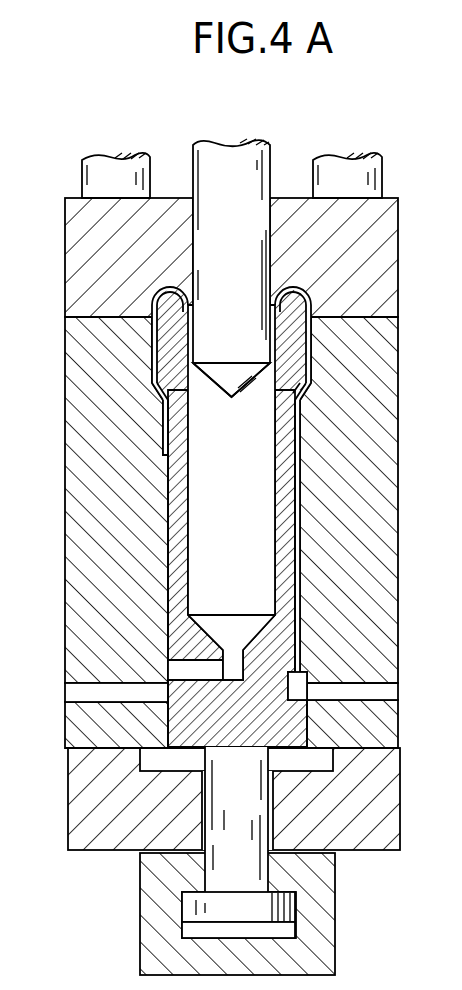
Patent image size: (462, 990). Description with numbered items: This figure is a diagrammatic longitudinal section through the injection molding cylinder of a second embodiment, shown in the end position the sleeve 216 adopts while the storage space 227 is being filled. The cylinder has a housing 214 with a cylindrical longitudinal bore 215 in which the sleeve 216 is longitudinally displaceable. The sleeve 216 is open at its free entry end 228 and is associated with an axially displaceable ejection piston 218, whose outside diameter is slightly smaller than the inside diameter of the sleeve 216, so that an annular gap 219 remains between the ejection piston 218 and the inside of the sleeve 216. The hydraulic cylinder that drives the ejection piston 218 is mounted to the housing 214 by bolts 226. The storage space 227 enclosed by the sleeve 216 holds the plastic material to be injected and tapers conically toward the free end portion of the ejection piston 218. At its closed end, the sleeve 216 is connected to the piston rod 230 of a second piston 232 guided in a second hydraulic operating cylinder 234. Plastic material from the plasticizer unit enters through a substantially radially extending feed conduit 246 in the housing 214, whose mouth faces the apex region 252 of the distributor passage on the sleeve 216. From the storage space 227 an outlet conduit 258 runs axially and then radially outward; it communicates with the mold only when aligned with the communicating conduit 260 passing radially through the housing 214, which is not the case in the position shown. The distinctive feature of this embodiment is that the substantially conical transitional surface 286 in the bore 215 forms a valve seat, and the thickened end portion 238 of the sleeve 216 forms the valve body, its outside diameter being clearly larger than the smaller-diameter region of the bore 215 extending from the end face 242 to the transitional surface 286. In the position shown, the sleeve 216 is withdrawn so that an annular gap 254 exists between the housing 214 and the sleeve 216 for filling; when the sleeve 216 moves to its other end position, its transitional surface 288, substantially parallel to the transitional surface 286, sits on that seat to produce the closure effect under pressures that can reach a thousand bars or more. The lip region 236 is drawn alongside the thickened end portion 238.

The housing 214 is at (385, 626).
The bore 215 is at (298, 445).
The sleeve 216 is at (286, 497).
The ejection piston 218 is at (248, 168).
The annular gap 219 is at (283, 338).
The bolts 226 is at (112, 172).
The storage space 227 is at (264, 522).
The free entry end 228 is at (305, 296).
The piston rod 230 is at (232, 867).
The second piston 232 is at (217, 910).
The second hydraulic operating cylinder 234 is at (160, 945).
The seal lip 236 is at (300, 358).
The thickened end portion 238 is at (291, 383).
The end face 242 is at (190, 755).
The feed conduit 246 is at (382, 688).
The apex region 252 is at (355, 712).
The annular gap 254 is at (166, 432).
The outlet conduit 258 is at (172, 648).
The communicating conduit 260 is at (78, 690).
The transitional surface 286 is at (160, 385).
The transitional surface 288 is at (262, 400).